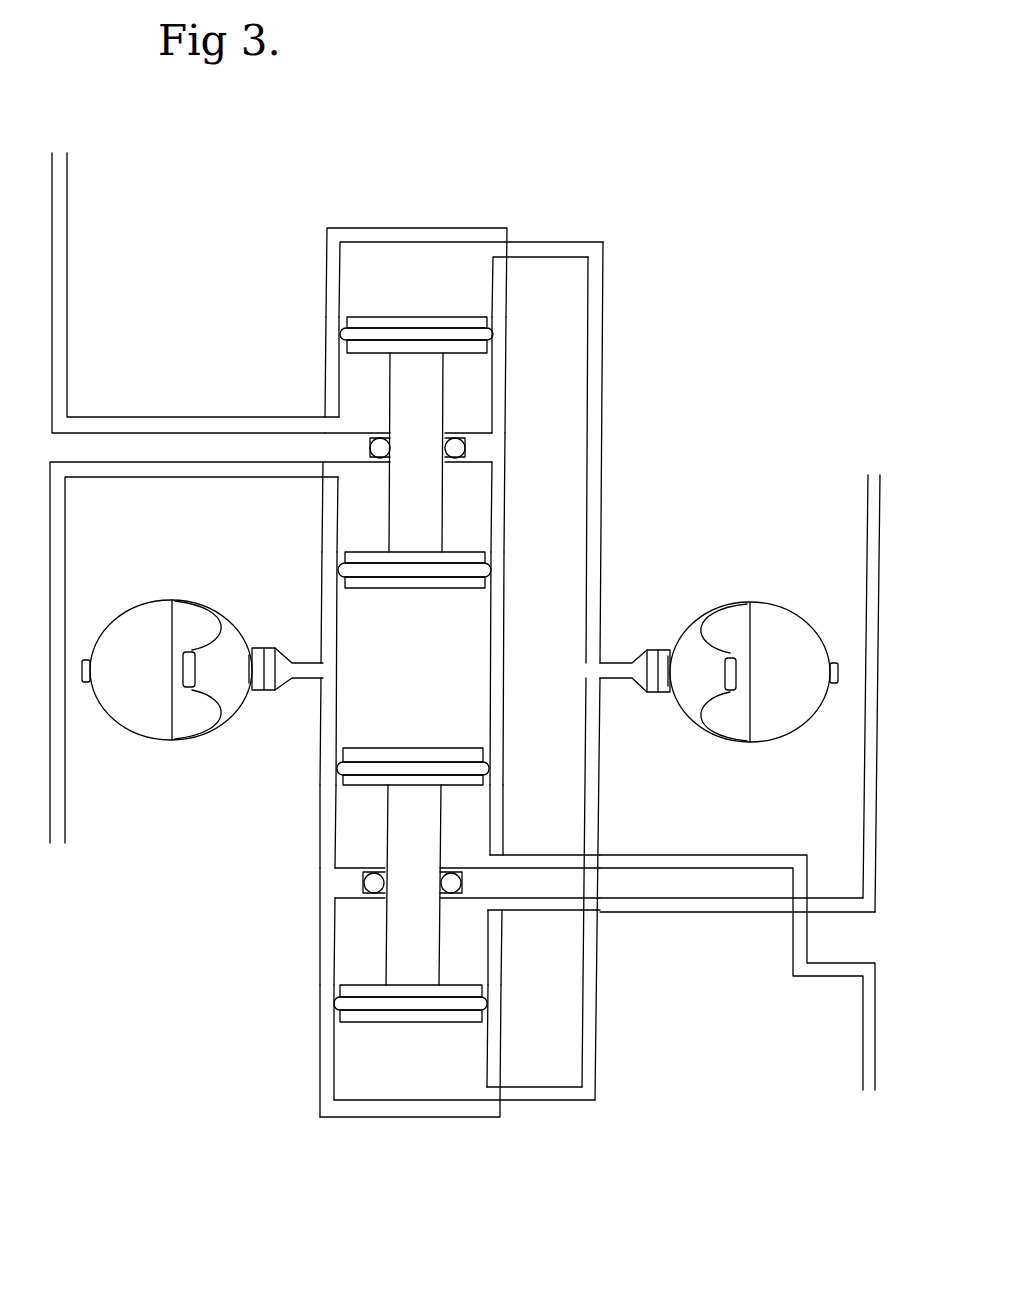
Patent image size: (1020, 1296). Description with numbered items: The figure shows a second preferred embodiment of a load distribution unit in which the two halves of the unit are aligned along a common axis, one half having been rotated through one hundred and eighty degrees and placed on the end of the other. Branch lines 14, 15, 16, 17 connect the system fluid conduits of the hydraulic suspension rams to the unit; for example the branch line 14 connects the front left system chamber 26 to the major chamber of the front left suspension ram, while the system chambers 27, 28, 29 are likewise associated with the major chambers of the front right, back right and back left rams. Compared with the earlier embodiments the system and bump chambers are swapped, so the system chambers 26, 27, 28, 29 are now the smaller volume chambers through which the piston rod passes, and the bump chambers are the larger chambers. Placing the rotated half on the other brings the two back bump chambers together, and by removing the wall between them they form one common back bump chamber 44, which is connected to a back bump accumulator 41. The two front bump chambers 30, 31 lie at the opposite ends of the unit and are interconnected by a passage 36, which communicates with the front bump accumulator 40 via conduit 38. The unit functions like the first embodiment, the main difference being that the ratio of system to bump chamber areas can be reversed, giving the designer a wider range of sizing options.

The branch line 14 is at (68, 247).
The branch line 15 is at (872, 570).
The branch line 16 is at (865, 1045).
The branch line 17 is at (65, 600).
The front left system chamber 26 is at (352, 385).
The system chamber 27 is at (357, 925).
The system chamber 28 is at (350, 822).
The system chamber 29 is at (353, 530).
The front bump chamber 30 is at (400, 253).
The front bump chamber 31 is at (355, 1063).
The passage 36 is at (595, 368).
The conduit 38 is at (612, 675).
The front bump accumulator 40 is at (728, 605).
The back bump accumulator 41 is at (170, 738).
The common back bump chamber 44 is at (472, 700).